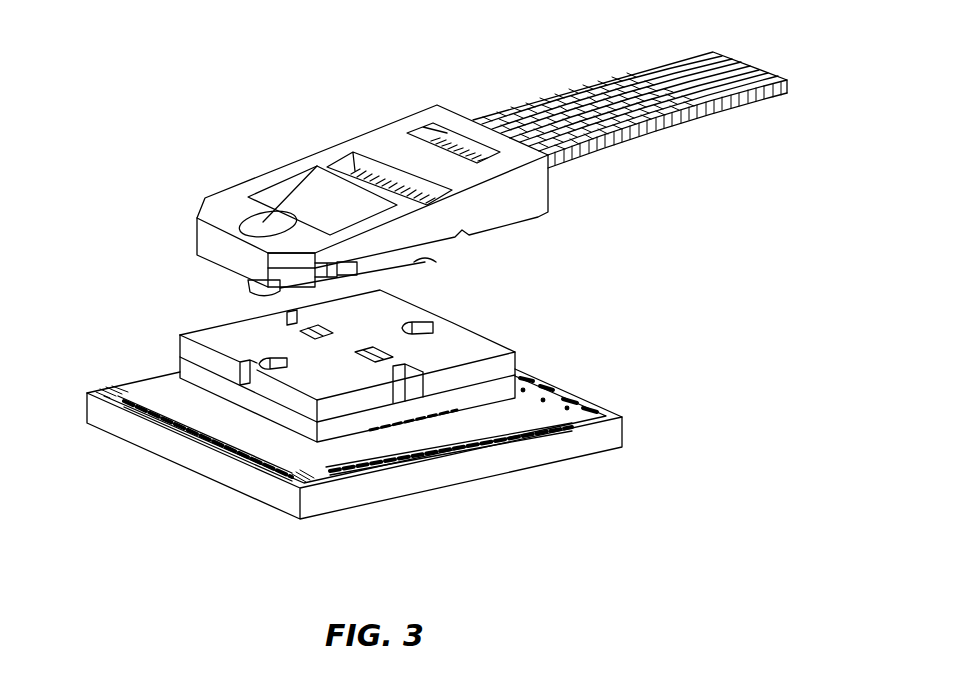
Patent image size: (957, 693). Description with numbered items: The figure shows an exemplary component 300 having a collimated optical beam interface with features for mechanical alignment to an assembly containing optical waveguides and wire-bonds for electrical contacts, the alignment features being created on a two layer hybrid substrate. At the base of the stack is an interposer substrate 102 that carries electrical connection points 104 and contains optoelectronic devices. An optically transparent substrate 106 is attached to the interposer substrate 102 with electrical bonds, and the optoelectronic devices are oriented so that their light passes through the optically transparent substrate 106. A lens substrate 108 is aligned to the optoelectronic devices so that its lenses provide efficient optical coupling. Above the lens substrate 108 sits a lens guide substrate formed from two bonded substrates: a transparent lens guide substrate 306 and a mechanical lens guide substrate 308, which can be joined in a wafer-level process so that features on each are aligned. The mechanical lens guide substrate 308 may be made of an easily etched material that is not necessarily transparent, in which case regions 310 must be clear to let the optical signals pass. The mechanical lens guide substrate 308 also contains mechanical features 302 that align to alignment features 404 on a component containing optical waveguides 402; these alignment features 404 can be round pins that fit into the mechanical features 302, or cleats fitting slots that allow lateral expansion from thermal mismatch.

The component 300 is at (96, 184).
The component containing optical waveguides 402 is at (528, 200).
The alignment features 404 is at (420, 262).
The mechanical features 302 is at (182, 338).
The regions 310 is at (350, 350).
The transparent lens guide substrate 306 is at (347, 425).
The mechanical lens guide substrate 308 is at (403, 427).
The interposer substrate 102 is at (173, 447).
The electrical connection points 104 is at (583, 400).
The optically transparent substrate 106 is at (273, 450).
The lens substrate 108 is at (305, 447).